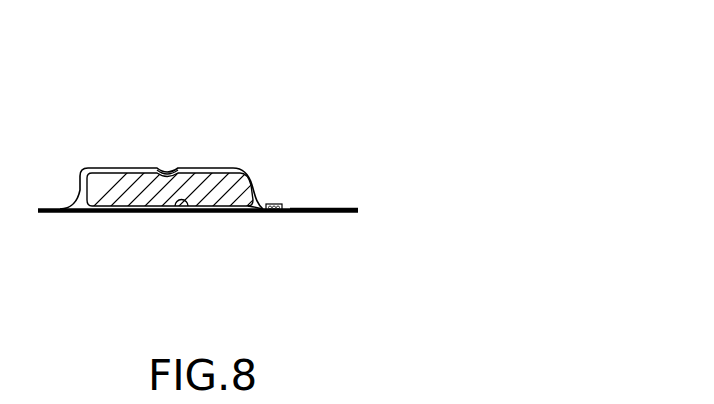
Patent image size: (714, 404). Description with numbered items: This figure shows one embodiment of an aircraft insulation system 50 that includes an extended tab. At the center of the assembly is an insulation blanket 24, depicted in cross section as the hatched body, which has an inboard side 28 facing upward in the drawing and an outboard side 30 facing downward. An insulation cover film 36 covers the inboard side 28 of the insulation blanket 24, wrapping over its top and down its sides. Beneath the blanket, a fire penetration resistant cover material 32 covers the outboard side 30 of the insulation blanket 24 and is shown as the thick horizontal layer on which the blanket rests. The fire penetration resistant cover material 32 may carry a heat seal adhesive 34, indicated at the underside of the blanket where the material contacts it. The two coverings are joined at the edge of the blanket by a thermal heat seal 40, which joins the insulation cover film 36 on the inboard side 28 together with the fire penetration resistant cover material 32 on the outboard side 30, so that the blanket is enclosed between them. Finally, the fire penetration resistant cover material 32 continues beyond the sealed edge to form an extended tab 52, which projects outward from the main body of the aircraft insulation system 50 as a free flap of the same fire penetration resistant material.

The insulation blanket 24 is at (115, 180).
The inboard side 28 is at (177, 171).
The insulation cover film 36 is at (197, 166).
The thermal heat seal 40 is at (277, 203).
The fire penetration resistant cover material 32 is at (102, 213).
The heat seal adhesive 34 is at (182, 204).
The outboard side 30 is at (243, 213).
The extended tab 52 is at (303, 214).
The aircraft insulation system 50 is at (362, 92).